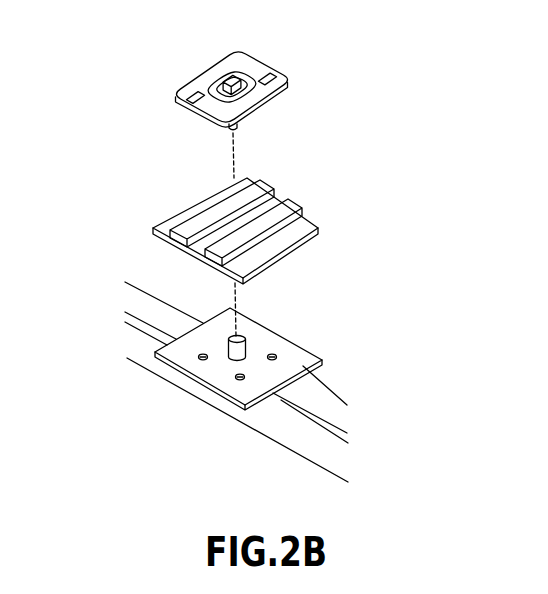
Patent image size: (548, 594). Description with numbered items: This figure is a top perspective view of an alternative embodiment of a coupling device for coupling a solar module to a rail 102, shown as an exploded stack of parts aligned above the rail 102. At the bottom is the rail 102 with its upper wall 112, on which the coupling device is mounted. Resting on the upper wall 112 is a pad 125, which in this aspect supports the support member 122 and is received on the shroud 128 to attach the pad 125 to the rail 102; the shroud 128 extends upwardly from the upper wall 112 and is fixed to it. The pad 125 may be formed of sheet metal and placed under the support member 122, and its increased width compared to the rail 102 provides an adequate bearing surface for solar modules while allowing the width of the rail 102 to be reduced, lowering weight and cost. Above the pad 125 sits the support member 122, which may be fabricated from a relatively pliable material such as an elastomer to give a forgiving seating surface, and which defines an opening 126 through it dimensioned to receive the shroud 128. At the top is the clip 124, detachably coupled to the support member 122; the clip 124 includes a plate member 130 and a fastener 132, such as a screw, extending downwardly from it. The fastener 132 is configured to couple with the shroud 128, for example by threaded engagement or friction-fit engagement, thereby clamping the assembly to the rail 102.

The rail 102 is at (346, 380).
The upper wall 112 is at (338, 418).
The support member 122 is at (320, 210).
The clip 124 is at (158, 82).
The pad 125 is at (304, 354).
The opening 126 is at (282, 179).
The shroud 128 is at (249, 346).
The plate member 130 is at (266, 68).
The fastener 132 is at (240, 130).